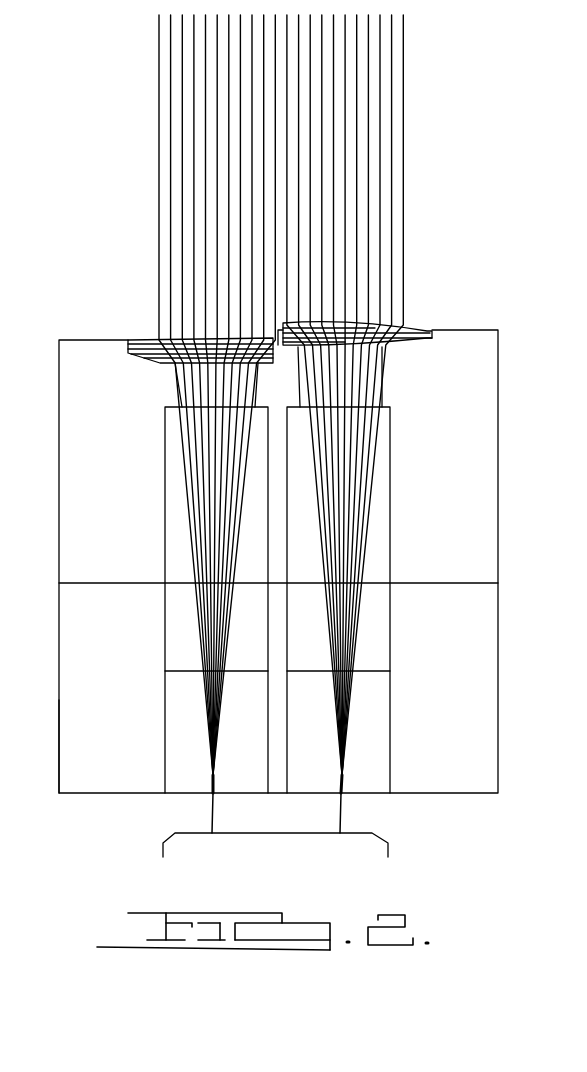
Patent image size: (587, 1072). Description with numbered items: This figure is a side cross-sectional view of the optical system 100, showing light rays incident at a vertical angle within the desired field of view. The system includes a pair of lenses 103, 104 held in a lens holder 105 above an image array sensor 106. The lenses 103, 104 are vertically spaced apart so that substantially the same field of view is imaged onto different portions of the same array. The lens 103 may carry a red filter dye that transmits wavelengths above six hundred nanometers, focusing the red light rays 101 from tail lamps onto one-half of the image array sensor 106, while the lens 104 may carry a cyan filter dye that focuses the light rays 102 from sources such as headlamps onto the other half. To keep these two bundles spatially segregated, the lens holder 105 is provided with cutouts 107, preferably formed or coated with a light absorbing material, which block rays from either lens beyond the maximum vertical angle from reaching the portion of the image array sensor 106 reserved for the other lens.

The incident light beam 100 is at (425, 168).
The red light rays 101 is at (390, 490).
The light rays 102 is at (172, 500).
The lens 103 is at (418, 312).
The lens 104 is at (148, 328).
The lens holder 105 is at (58, 760).
The image array sensor 106 is at (372, 833).
The cutouts 107 is at (405, 638).